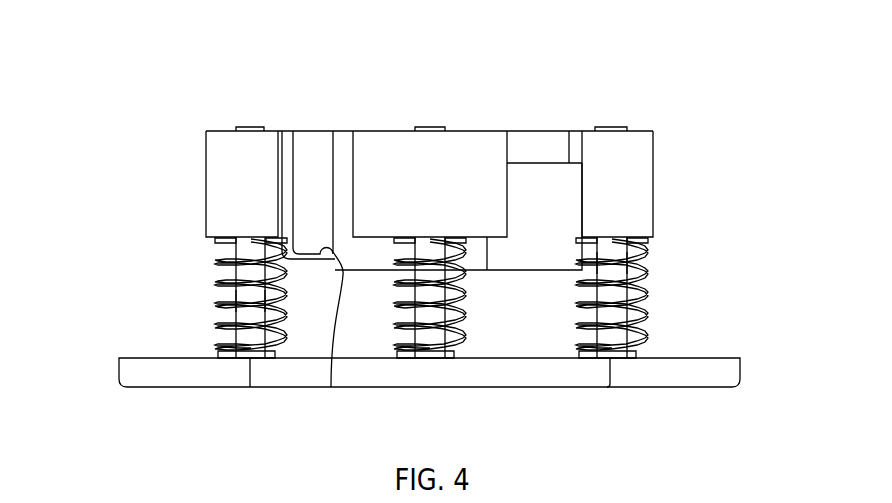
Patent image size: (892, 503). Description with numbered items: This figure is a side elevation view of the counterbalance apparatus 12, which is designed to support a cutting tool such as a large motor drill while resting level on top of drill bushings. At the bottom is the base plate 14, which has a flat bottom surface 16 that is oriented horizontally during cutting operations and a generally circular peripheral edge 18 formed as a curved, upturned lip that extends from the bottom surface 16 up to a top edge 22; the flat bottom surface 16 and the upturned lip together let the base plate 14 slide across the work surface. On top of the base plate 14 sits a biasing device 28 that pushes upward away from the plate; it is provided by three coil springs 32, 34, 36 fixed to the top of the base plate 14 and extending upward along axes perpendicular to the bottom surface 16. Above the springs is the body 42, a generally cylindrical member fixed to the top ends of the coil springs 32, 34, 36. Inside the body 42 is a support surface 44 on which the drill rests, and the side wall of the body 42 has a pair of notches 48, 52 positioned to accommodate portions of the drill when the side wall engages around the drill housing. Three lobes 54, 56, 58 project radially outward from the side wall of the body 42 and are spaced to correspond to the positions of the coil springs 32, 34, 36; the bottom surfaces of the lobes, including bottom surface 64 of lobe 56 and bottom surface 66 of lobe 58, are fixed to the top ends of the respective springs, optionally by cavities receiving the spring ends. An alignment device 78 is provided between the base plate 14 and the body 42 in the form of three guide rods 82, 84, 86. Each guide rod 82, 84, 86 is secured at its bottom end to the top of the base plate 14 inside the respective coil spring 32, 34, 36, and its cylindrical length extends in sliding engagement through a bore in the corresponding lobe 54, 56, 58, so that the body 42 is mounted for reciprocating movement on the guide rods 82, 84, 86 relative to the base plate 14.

The apparatus 12 is at (694, 70).
The base plate 14 is at (721, 352).
The bottom surface 16 is at (230, 388).
The peripheral edge 18 is at (740, 368).
The top edge 22 is at (125, 357).
The biasing device 28 is at (428, 298).
The coil spring 32 is at (412, 328).
The coil spring 34 is at (643, 318).
The coil spring 36 is at (227, 307).
The body 42 is at (342, 124).
The support surface 44 is at (332, 387).
The notch 48 is at (313, 142).
The notch 52 is at (536, 140).
The lobe 54 is at (455, 150).
The lobe 56 is at (638, 190).
The lobe 58 is at (228, 184).
The bottom surface of lobe 64 is at (486, 272).
The bottom surface of lobe 66 is at (215, 238).
The alignment device 78 is at (262, 304).
The guide rod 82 is at (425, 300).
The guide rod 84 is at (609, 283).
The guide rod 86 is at (243, 278).